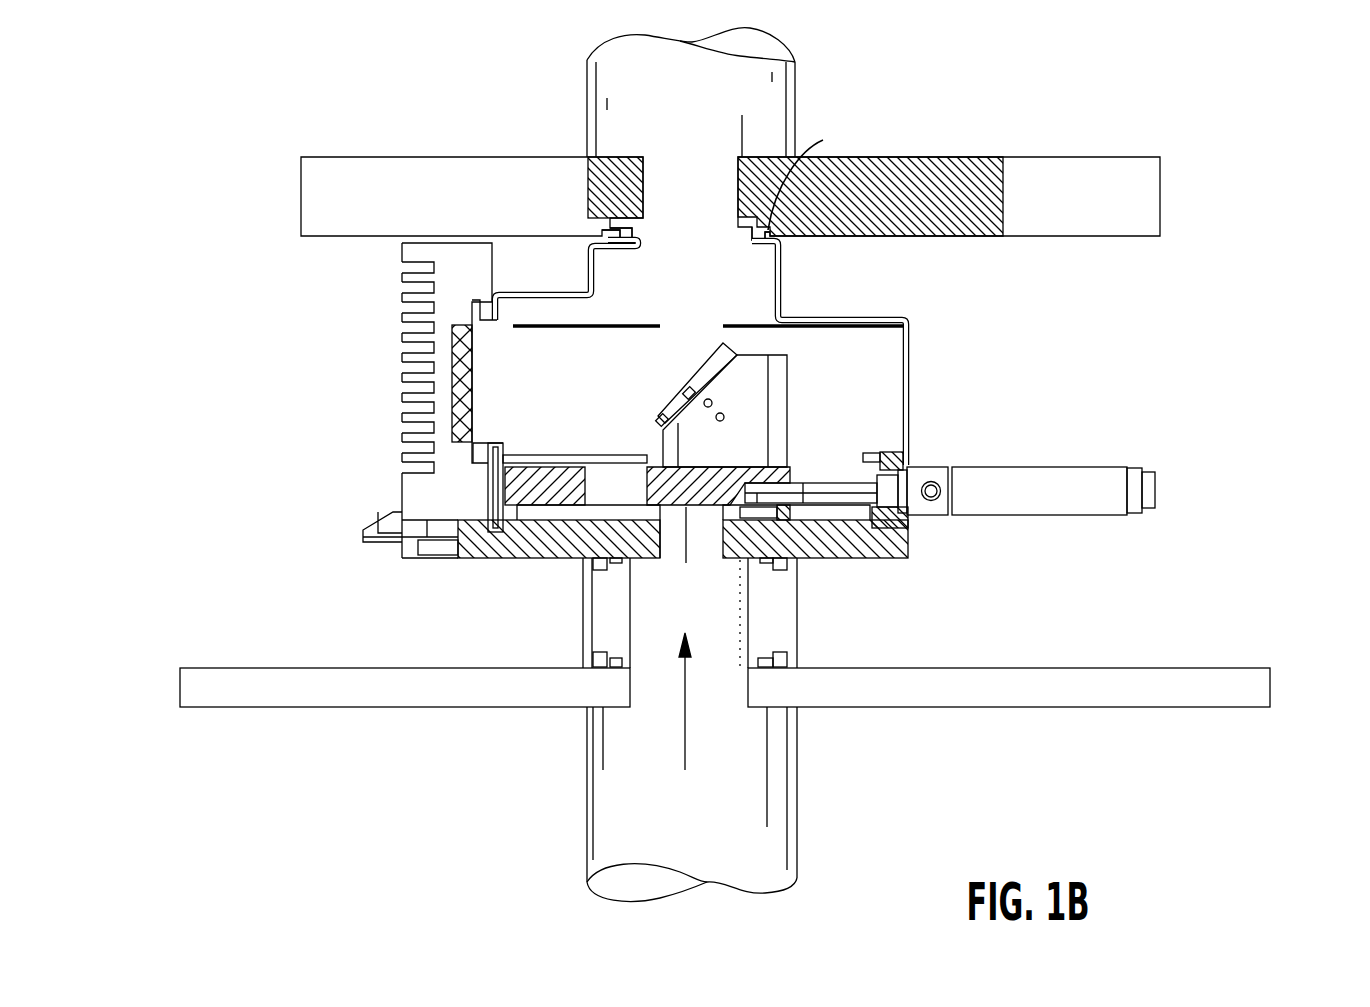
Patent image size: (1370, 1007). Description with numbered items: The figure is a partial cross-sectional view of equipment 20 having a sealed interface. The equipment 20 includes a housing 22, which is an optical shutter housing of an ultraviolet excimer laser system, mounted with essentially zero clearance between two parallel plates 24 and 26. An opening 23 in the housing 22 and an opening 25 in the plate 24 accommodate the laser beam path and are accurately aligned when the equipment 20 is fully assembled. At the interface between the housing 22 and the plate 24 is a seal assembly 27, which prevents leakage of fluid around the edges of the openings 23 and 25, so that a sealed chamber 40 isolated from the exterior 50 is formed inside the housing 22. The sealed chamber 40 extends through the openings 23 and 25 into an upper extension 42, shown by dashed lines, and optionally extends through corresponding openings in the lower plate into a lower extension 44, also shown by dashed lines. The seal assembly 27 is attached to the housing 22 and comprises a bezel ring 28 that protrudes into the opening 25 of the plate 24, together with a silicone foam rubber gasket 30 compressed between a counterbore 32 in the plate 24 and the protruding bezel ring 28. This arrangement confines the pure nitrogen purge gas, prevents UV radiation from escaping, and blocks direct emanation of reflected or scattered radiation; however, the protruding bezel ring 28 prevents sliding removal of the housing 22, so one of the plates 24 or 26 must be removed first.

The equipment 20 is at (1250, 280).
The housing 22 is at (1158, 245).
The opening 23 is at (635, 242).
The plate 24 is at (917, 183).
The opening 25 is at (643, 173).
The plate 26 is at (1095, 680).
The seal assembly 27 is at (795, 247).
The bezel ring 28 is at (633, 238).
The silicone foam rubber gasket 30 is at (752, 225).
The counterbore 32 is at (814, 174).
The sealed chamber 40 is at (513, 357).
The upper extension 42 is at (640, 75).
The lower extension 44 is at (765, 840).
The exterior 50 is at (334, 455).